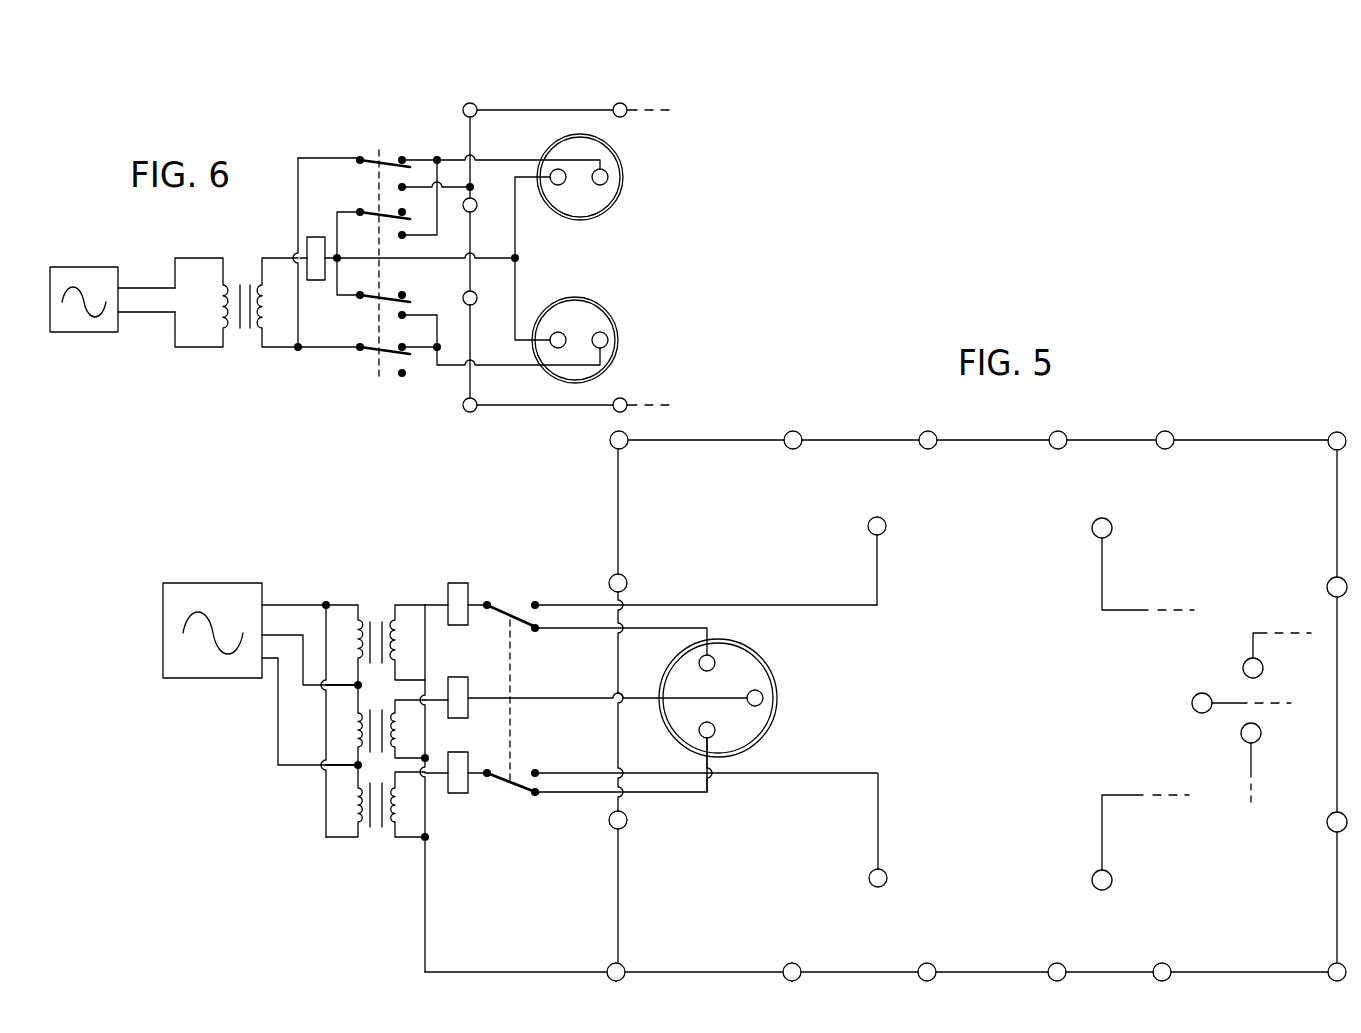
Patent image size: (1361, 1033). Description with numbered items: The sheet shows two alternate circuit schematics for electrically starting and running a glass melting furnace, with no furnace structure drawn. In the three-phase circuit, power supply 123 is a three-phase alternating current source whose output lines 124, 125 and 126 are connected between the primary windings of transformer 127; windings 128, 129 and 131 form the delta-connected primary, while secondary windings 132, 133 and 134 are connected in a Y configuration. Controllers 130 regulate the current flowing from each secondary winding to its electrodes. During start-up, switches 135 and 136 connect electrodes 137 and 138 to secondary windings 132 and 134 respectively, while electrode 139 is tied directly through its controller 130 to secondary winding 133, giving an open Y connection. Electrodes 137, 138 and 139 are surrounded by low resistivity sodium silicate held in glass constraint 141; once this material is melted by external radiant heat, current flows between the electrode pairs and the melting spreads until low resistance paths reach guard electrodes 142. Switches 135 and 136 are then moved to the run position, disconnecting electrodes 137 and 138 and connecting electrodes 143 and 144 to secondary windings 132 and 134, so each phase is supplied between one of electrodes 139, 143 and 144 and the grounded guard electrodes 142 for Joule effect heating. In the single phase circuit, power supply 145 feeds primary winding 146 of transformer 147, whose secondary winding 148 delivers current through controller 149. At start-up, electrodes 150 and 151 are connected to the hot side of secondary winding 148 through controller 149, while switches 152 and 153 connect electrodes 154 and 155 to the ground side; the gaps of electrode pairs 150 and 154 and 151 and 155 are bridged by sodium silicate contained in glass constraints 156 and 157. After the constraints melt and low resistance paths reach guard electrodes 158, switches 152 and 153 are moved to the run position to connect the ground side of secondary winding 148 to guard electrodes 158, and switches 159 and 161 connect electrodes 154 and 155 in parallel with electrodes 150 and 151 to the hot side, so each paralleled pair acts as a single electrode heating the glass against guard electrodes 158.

In FIG. 5, the power supply 123 is at (185, 598).
In FIG. 5, the output line 124 is at (275, 605).
In FIG. 5, the output line 125 is at (275, 635).
In FIG. 5, the output line 126 is at (279, 700).
In FIG. 5, the transformer 127 is at (376, 596).
In FIG. 5, the primary winding 128 is at (356, 654).
In FIG. 5, the primary winding 129 is at (356, 744).
In FIG. 5, the controller 130 is at (459, 583).
In FIG. 5, the primary winding 131 is at (356, 821).
In FIG. 5, the secondary winding 132 is at (397, 657).
In FIG. 5, the secondary winding 133 is at (397, 747).
In FIG. 5, the secondary winding 134 is at (397, 824).
In FIG. 5, the switch 135 is at (507, 604).
In FIG. 5, the switch 136 is at (500, 789).
In FIG. 5, the electrode 137 is at (714, 663).
In FIG. 5, the electrode 138 is at (710, 732).
In FIG. 5, the electrode 139 is at (752, 695).
In FIG. 5, the glass constraint 141 is at (786, 686).
In FIG. 5, the guard electrode 142 is at (622, 435).
In FIG. 5, the electrode 143 is at (884, 529).
In FIG. 5, the electrode 144 is at (884, 884).
In FIG. 6, the power supply 145 is at (98, 268).
In FIG. 6, the primary winding 146 is at (222, 299).
In FIG. 6, the transformer 147 is at (242, 262).
In FIG. 6, the secondary winding 148 is at (263, 303).
In FIG. 6, the controller 149 is at (318, 230).
In FIG. 6, the electrode 150 is at (561, 184).
In FIG. 6, the electrode 151 is at (566, 329).
In FIG. 6, the switch 152 is at (373, 156).
In FIG. 6, the switch 153 is at (371, 356).
In FIG. 6, the electrode 154 is at (603, 189).
In FIG. 6, the electrode 155 is at (600, 334).
In FIG. 6, the glass constraint 156 is at (595, 173).
In FIG. 6, the glass constraint 157 is at (591, 339).
In FIG. 6, the guard electrode 158 is at (480, 97).
In FIG. 6, the switch 159 is at (371, 208).
In FIG. 6, the switch 161 is at (362, 302).